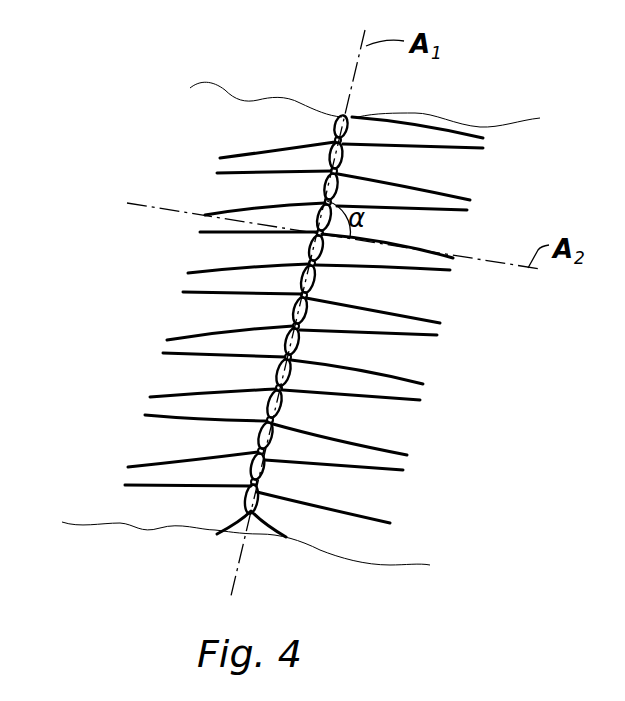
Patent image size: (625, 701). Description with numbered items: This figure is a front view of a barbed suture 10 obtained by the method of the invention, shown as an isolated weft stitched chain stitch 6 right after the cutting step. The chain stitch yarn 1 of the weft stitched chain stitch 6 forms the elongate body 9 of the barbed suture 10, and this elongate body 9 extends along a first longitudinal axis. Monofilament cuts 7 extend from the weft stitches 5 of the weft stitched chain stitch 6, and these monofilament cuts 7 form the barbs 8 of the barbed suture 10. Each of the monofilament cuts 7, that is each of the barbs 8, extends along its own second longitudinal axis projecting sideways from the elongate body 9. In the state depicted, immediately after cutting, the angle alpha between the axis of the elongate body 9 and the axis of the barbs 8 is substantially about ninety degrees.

The chain stitch yarn 1 is at (313, 315).
The weft stitches 5 is at (295, 305).
The weft stitched chain stitch 6 is at (239, 540).
The monofilament cuts 7 is at (326, 320).
The barbs 8 is at (399, 246).
The elongate body 9 is at (332, 287).
The barbed suture 10 is at (494, 171).